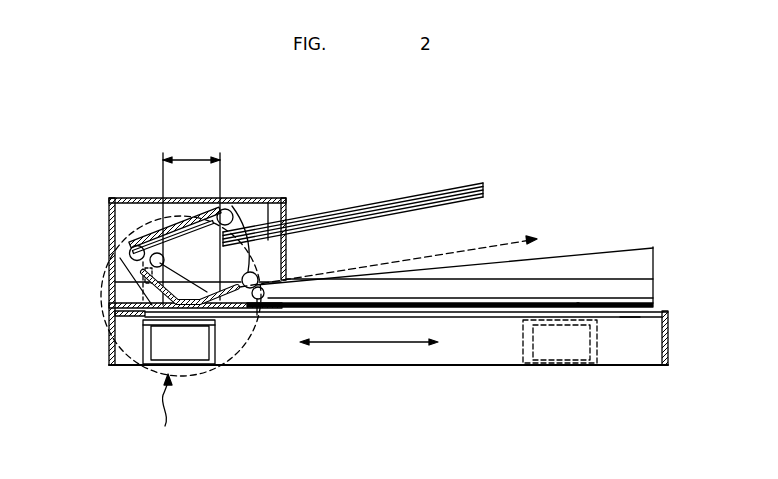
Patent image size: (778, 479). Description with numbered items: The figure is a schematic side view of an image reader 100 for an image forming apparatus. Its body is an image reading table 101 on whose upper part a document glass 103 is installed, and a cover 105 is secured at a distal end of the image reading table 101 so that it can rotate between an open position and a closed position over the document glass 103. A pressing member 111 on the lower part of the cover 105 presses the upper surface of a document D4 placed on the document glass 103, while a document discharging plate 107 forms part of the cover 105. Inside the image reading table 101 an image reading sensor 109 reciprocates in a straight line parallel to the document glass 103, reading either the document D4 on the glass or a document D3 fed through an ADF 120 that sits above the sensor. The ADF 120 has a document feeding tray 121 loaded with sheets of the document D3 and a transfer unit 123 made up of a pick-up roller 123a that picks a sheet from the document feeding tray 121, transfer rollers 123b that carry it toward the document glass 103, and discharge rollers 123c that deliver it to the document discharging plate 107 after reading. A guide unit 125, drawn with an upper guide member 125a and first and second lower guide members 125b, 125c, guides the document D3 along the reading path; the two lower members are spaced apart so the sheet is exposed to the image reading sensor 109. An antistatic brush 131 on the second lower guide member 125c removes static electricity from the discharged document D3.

The image reader 100 is at (533, 109).
The image reading table 101 is at (668, 333).
The document glass 103 is at (627, 317).
The cover 105 is at (643, 287).
The document discharging plate 107 is at (633, 251).
The image reading sensor 109 is at (205, 348).
The pressing member 111 is at (577, 303).
The ADF 120 is at (257, 200).
The document feeding tray 121 is at (262, 216).
The transfer unit 123 is at (43, 170).
The pick-up roller 123a is at (205, 207).
The transfer rollers 123b is at (130, 243).
The discharge rollers 123c is at (126, 234).
The guide unit 125 is at (43, 300).
The upper guide member 125a is at (104, 296).
The first lower guide member 125b is at (197, 290).
The second lower guide member 125c is at (120, 360).
The antistatic brush 131 is at (228, 208).
The document D3 is at (385, 203).
The document D4 is at (542, 310).